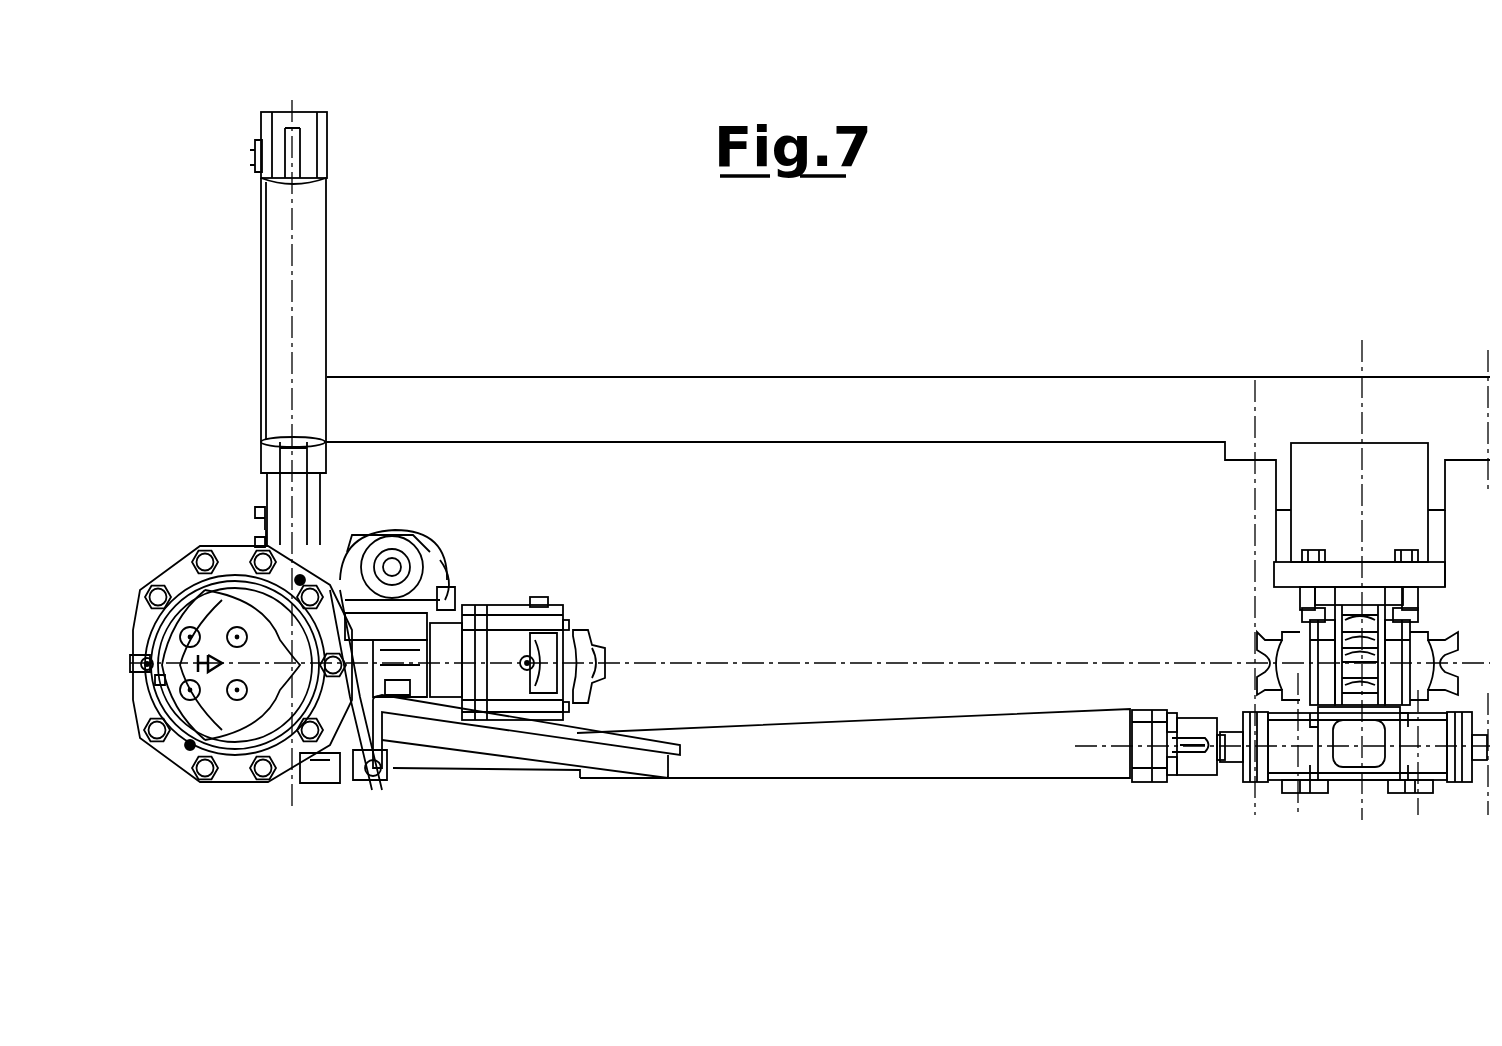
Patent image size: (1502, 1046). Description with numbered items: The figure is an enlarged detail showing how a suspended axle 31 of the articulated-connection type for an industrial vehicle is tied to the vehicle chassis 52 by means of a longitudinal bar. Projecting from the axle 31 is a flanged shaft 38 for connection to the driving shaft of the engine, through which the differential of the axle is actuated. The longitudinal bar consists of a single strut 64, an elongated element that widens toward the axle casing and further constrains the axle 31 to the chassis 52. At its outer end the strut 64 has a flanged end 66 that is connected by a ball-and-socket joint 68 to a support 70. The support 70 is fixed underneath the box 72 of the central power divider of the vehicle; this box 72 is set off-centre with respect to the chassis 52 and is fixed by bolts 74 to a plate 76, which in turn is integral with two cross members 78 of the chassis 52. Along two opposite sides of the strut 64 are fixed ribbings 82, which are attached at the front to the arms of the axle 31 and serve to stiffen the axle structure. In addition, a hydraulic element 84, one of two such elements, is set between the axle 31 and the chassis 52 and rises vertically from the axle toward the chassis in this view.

The axle 31 is at (208, 799).
The flanged shaft 38 is at (603, 628).
The chassis 52 is at (840, 393).
The strut 64 is at (823, 768).
The flanged end 66 is at (1140, 762).
The ball-and-socket joint 68 is at (1205, 762).
The support 70 is at (1290, 758).
The box 72 is at (1368, 650).
The bolts 74 is at (1393, 553).
The plate 76 is at (1437, 574).
The cross members 78 is at (1430, 473).
The ribbings 82 is at (562, 735).
The hydraulic elements 84 is at (312, 254).